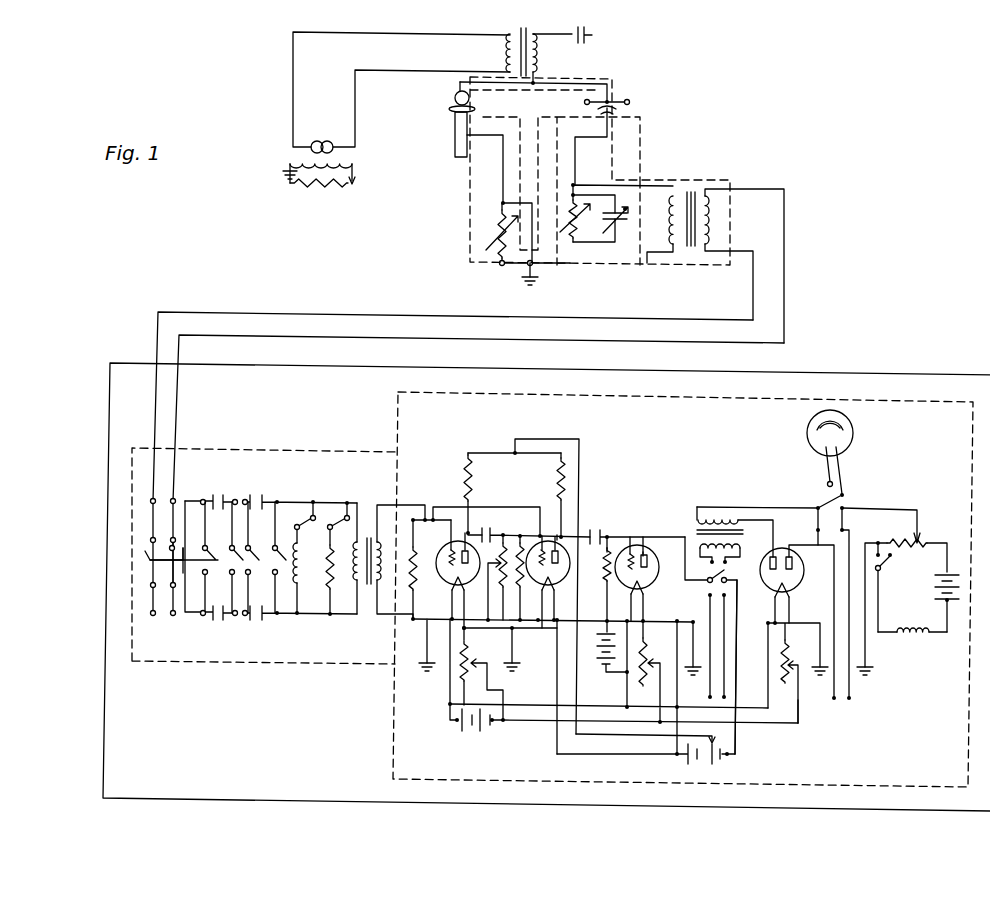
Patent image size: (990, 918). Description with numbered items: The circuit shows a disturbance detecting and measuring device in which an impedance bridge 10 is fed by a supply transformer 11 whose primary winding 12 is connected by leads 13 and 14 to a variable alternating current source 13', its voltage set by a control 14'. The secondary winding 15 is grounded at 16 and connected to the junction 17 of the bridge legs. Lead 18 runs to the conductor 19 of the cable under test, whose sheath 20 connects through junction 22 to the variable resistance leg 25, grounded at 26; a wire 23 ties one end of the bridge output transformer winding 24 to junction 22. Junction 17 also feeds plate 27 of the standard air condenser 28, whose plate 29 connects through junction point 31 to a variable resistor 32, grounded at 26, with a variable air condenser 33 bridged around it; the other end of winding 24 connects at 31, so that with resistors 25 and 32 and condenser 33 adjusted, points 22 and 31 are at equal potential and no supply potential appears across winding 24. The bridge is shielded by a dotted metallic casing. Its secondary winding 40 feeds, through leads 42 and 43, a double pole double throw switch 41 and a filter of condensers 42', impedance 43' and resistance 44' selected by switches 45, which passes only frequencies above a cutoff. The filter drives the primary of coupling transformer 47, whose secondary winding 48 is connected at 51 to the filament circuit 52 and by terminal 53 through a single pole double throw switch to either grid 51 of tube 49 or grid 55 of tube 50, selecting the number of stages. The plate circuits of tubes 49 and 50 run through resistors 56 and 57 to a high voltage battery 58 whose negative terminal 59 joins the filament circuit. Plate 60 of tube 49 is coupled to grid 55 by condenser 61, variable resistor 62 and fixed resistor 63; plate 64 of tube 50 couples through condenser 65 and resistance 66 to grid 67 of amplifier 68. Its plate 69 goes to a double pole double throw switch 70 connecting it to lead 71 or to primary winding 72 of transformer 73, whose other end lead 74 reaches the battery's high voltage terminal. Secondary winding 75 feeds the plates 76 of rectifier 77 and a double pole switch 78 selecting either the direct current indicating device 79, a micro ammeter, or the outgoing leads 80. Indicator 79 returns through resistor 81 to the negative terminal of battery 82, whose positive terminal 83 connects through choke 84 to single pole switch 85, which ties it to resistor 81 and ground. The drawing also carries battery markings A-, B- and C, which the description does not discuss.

The impedance bridge 10 is at (600, 163).
The supply transformer 11 is at (525, 118).
The primary winding 12 is at (506, 48).
The lead 13 is at (401, 89).
The variable source of alternating current 13' is at (291, 148).
The lead 14 is at (421, 108).
The control 14' is at (301, 173).
The secondary winding 15 is at (552, 44).
The ground connection 16 is at (592, 36).
The junction 17 is at (536, 84).
The lead 18 is at (460, 84).
The conductor 19 is at (455, 103).
The sheath 20 is at (455, 140).
The junction 22 is at (503, 203).
The wire 23 is at (649, 266).
The bridge output transformer winding 24 is at (680, 252).
The resistance leg 25 is at (501, 266).
The ground 26 is at (533, 268).
The plate 27 is at (611, 100).
The standard air condenser 28 is at (618, 108).
The plate 29 is at (620, 113).
The junction point 31 is at (576, 186).
The variable resistor 32 is at (576, 230).
The variable air condenser 33 is at (628, 207).
The secondary winding 40 is at (714, 210).
The double pole double throw switch 41 is at (148, 548).
The lead 42 is at (486, 455).
The condensers 42' is at (271, 578).
The lead 43 is at (496, 475).
The impedance 43' is at (299, 577).
The resistance 44' is at (342, 578).
The switches 45 is at (292, 512).
The coupling transformer 47 is at (363, 618).
The secondary winding 48 is at (425, 505).
The thermionic tube 49 is at (447, 572).
The thermionic tube 50 is at (515, 660).
The grid 51 is at (411, 625).
The filament circuit 52 is at (461, 641).
The terminal 53 is at (465, 458).
The grid 55 is at (546, 537).
The resistor 56 is at (514, 453).
The resistor 57 is at (566, 482).
The high voltage battery 58 is at (731, 758).
The negative terminal 59 is at (632, 750).
The plate 60 is at (468, 548).
The condenser 61 is at (491, 530).
The variable resistor 62 is at (504, 590).
The fixed resistor 63 is at (523, 540).
The plate 64 is at (588, 530).
The condenser 65 is at (612, 552).
The resistance 66 is at (643, 552).
The grid 67 is at (605, 585).
The thermionic amplifier 68 is at (650, 577).
The plate 69 is at (697, 510).
The double pole double throw switch 70 is at (708, 583).
The lead 71 is at (726, 690).
The primary winding 72 is at (742, 548).
The transformer 73 is at (748, 530).
The lead 74 is at (733, 614).
The secondary winding 75 is at (727, 518).
The plates 76 is at (817, 530).
The thermionic rectifier 77 is at (803, 580).
The double pole switch 78 is at (845, 494).
The direct current indicating device 79 is at (853, 438).
The leads 80 is at (840, 698).
The resistor 81 is at (919, 541).
The battery 82 is at (938, 590).
The positive terminal 83 is at (950, 605).
The choke 84 is at (912, 637).
The single pole switch 85 is at (880, 569).
The A battery negative A- is at (456, 720).
The B battery negative B- is at (557, 756).
The C battery C is at (582, 646).